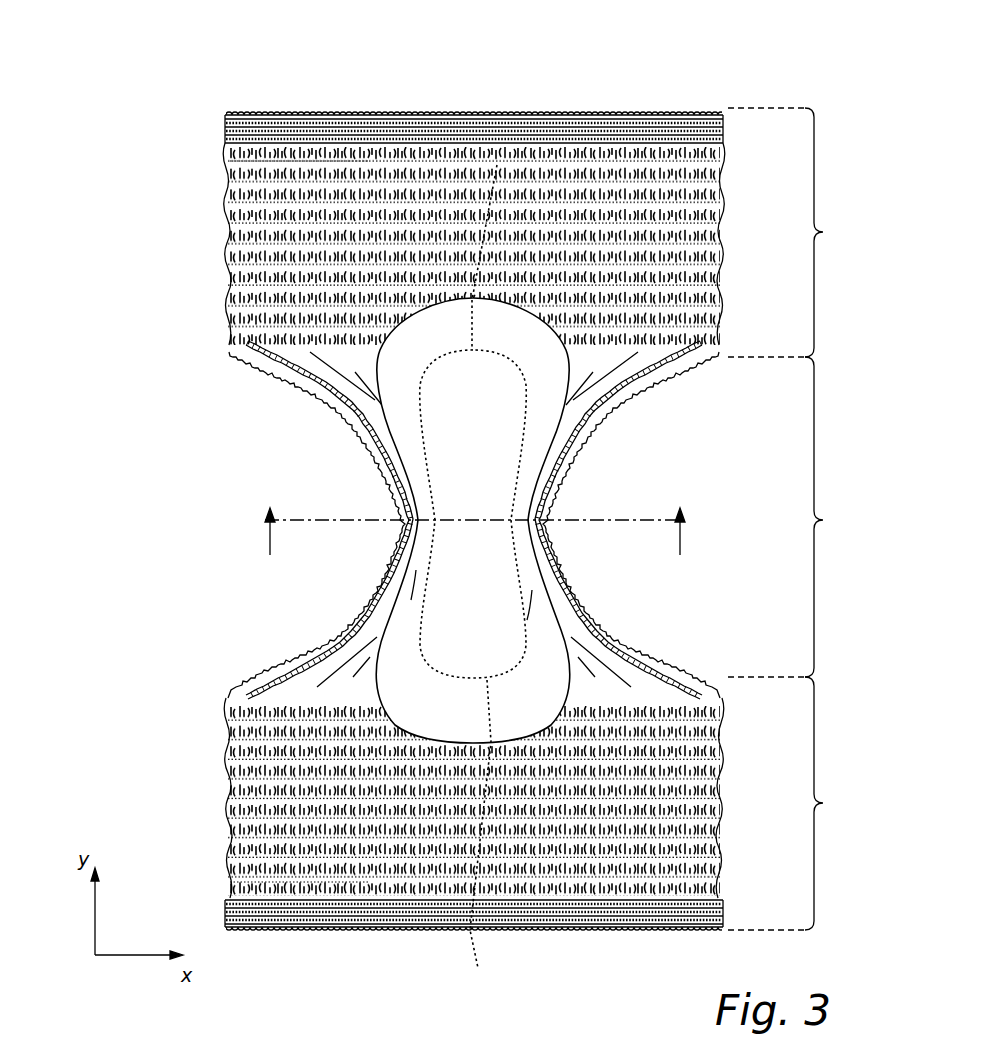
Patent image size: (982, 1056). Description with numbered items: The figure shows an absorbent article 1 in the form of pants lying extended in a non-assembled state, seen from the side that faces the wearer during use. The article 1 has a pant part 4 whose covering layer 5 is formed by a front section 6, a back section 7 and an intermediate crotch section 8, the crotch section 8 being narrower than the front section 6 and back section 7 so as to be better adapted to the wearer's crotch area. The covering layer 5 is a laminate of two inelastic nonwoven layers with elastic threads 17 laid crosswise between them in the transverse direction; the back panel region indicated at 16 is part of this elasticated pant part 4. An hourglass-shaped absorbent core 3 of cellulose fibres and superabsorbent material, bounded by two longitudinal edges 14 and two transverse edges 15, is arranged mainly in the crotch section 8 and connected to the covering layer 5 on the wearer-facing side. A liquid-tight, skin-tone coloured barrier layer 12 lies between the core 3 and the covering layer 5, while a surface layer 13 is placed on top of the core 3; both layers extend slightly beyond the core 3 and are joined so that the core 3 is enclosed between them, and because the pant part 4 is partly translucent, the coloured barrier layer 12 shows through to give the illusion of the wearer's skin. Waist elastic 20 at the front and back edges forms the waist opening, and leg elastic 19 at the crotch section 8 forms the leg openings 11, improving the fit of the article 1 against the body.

The absorbent article 1 is at (724, 62).
The absorbent core 3 is at (460, 442).
The pant part 4 is at (674, 210).
The covering layer 5 is at (357, 352).
The front section 6 is at (787, 232).
The back section 7 is at (787, 803).
The crotch section 8 is at (832, 517).
The leg openings 11 is at (553, 498).
The barrier layer 12 is at (588, 655).
The surface layer 13 is at (380, 705).
The longitudinal edge 14 is at (538, 606).
The transverse edge 15 is at (520, 108).
The back belt panel 16 is at (615, 685).
The elastic threads 17 is at (585, 205).
The leg elastic 19 is at (605, 380).
The waist elastic 20 is at (416, 128).